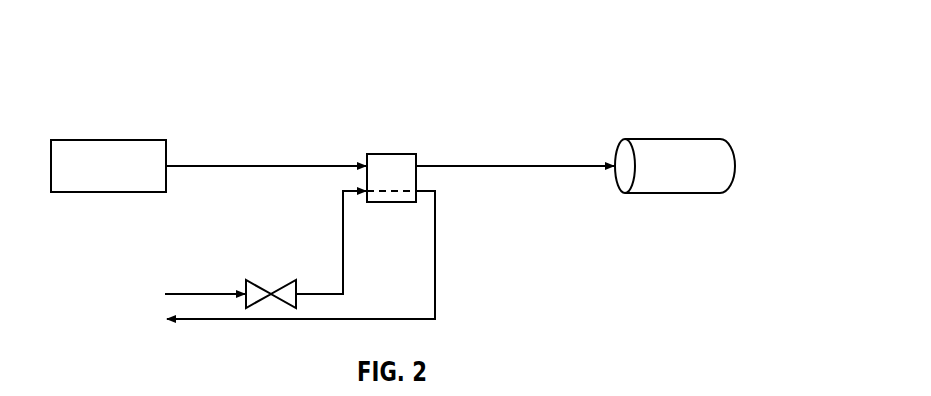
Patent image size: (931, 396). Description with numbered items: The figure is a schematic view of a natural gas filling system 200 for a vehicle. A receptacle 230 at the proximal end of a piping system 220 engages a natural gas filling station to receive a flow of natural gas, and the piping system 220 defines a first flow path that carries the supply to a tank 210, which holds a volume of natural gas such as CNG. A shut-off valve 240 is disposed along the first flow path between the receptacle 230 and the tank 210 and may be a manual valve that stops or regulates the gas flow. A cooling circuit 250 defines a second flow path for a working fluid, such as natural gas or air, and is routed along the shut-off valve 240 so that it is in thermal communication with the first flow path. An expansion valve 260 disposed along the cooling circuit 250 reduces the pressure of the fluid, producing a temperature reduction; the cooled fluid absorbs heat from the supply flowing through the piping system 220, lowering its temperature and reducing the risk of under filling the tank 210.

The natural gas filling system 200 is at (712, 91).
The tank 210 is at (660, 178).
The piping system 220 is at (258, 165).
The receptacle 230 is at (89, 178).
The shut-off valve 240 is at (390, 153).
The cooling circuit 250 is at (437, 240).
The expansion valve 260 is at (283, 290).